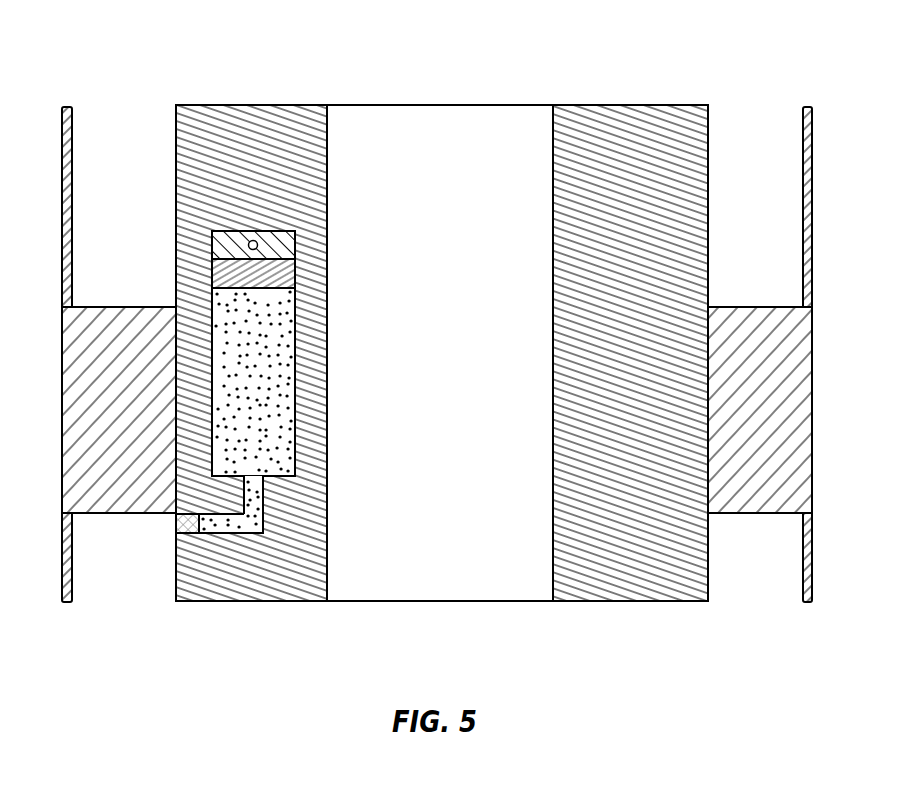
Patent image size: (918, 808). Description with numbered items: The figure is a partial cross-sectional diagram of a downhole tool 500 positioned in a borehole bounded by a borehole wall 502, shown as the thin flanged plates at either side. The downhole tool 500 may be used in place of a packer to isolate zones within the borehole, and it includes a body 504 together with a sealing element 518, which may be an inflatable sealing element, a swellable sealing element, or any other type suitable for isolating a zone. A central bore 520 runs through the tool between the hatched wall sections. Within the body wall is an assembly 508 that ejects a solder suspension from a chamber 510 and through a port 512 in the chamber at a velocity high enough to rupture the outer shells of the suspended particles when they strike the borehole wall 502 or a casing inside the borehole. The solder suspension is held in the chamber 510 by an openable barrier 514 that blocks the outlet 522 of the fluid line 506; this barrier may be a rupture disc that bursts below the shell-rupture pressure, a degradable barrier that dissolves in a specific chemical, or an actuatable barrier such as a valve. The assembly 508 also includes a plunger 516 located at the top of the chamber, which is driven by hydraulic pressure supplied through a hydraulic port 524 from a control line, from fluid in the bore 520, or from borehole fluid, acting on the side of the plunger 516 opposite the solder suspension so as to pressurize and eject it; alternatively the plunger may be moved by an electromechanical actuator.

The downhole tool 500 is at (154, 50).
The borehole wall 502 is at (72, 119).
The body 504 is at (630, 105).
The fluid line 506 is at (243, 534).
The assembly 508 is at (311, 418).
The chamber 510 is at (295, 318).
The port 512 is at (259, 482).
The openable barrier 514 is at (188, 534).
The plunger 516 is at (271, 253).
The sealing element 518 is at (90, 307).
The bore 520 is at (462, 365).
The outlet 522 is at (175, 523).
The hydraulic port 524 is at (254, 240).